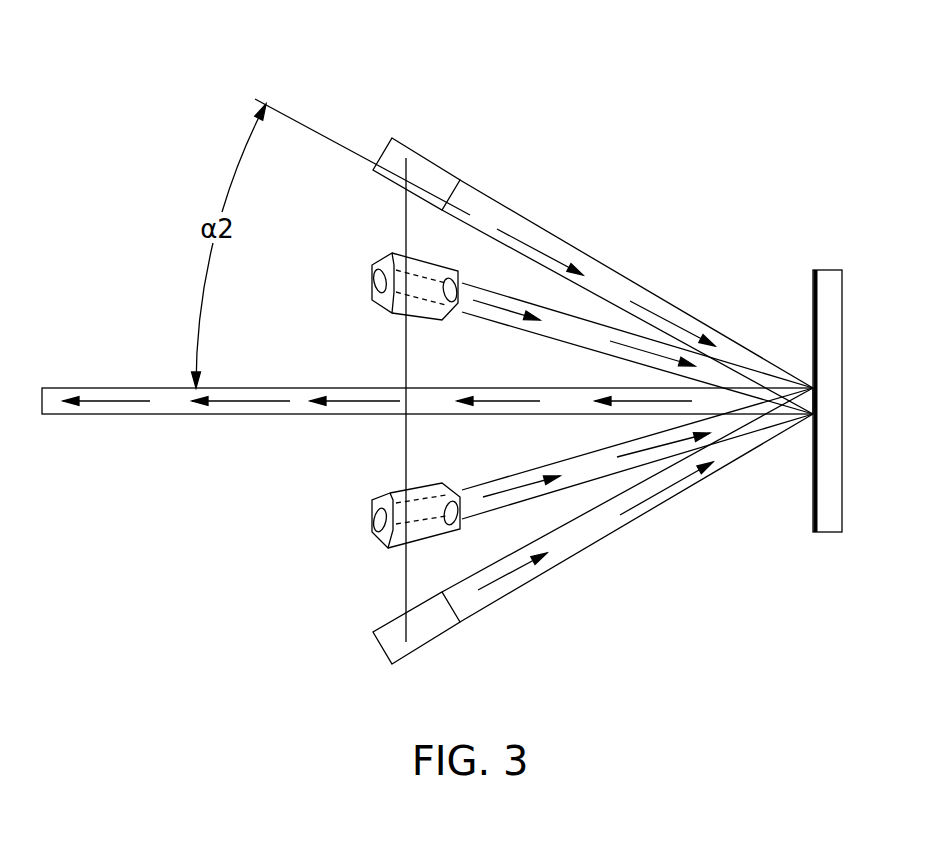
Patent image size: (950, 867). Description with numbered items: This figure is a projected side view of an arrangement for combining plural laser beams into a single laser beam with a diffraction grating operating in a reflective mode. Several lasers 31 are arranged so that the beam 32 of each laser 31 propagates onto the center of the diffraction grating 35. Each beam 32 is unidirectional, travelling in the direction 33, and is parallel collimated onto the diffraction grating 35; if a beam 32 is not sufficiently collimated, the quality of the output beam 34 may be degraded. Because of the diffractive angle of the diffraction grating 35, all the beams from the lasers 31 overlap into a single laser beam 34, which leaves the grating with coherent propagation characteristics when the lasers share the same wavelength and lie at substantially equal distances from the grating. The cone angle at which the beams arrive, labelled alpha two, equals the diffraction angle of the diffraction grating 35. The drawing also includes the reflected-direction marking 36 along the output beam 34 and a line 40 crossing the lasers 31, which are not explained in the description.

The laser 31 is at (395, 158).
The laser beam 32 is at (478, 210).
The direction 33 is at (571, 262).
The laser beam 34 is at (173, 408).
The diffraction grating 35 is at (826, 292).
The reflected light direction 36 is at (80, 403).
The reference plane line 40 is at (407, 590).